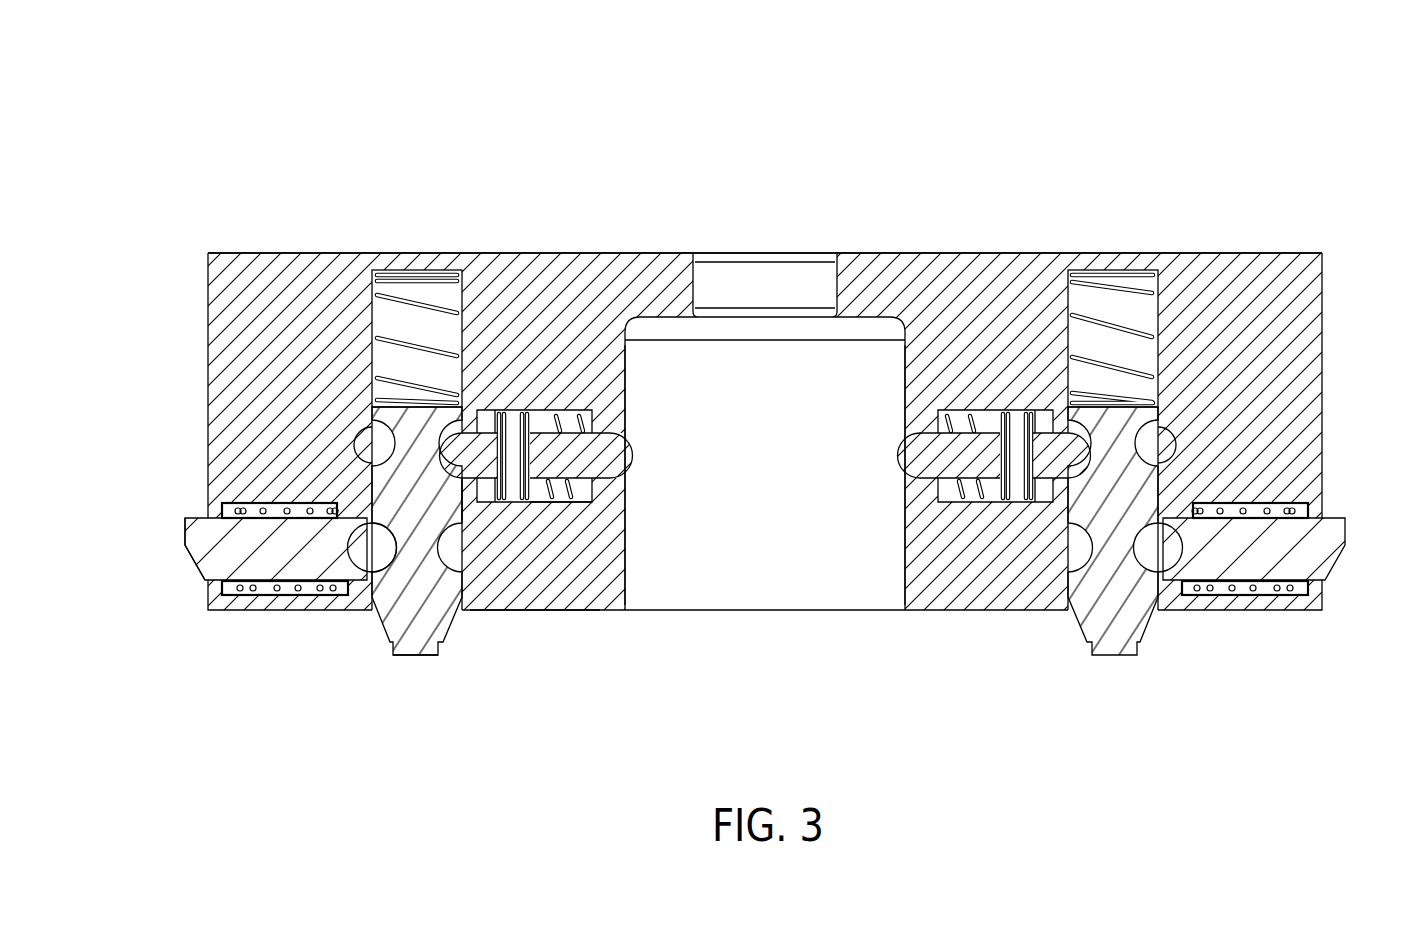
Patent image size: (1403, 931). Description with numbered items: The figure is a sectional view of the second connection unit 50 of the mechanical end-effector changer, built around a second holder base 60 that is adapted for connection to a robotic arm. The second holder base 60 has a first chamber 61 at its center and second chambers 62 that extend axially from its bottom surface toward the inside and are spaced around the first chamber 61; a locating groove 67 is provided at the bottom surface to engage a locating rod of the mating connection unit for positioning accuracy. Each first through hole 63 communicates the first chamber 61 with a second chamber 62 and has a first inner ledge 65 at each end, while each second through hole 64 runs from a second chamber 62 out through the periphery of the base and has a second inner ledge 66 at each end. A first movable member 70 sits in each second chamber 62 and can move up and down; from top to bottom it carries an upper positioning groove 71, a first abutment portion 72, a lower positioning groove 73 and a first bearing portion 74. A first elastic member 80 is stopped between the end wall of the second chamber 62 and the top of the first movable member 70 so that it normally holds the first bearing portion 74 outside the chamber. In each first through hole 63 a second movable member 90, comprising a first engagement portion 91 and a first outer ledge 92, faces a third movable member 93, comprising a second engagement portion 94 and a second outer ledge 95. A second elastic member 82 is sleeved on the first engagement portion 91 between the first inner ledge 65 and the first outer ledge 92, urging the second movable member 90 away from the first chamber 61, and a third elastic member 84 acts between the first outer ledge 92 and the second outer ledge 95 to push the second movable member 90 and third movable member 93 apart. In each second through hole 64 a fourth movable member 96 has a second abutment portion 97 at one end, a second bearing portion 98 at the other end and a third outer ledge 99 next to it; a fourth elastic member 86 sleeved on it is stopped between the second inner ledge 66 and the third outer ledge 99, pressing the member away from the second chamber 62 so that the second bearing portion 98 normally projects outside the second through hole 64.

The second connection unit 50 is at (1176, 134).
The second holder base 60 is at (1292, 300).
The first chamber 61 is at (825, 568).
The second chamber 62 is at (1160, 300).
The first through hole 63 is at (963, 422).
The second through hole 64 is at (1255, 500).
The first inner ledge 65 is at (1060, 422).
The second inner ledge 66 is at (1315, 515).
The locating groove 67 is at (535, 565).
The first movable member 70 is at (429, 656).
The upper positioning groove 71 is at (366, 432).
The first abutment portion 72 is at (378, 492).
The lower positioning groove 73 is at (357, 598).
The first bearing portion 74 is at (405, 600).
The first elastic member 80 is at (396, 300).
The second elastic member 82 is at (625, 503).
The third elastic member 84 is at (450, 545).
The fourth elastic member 86 is at (252, 596).
The second movable member 90 is at (563, 185).
The first engagement portion 91 is at (612, 452).
The first outer ledge 92 is at (540, 420).
The third movable member 93 is at (517, 182).
The second engagement portion 94 is at (483, 422).
The second outer ledge 95 is at (500, 420).
The fourth movable member 96 is at (191, 565).
The second abutment portion 97 is at (305, 585).
The second bearing portion 98 is at (207, 532).
The third outer ledge 99 is at (230, 506).